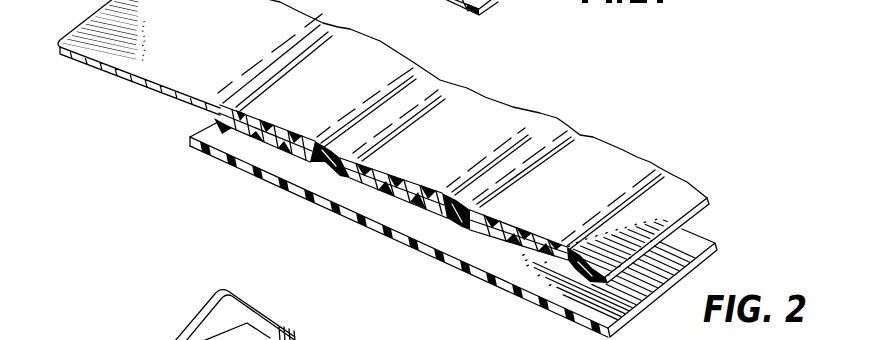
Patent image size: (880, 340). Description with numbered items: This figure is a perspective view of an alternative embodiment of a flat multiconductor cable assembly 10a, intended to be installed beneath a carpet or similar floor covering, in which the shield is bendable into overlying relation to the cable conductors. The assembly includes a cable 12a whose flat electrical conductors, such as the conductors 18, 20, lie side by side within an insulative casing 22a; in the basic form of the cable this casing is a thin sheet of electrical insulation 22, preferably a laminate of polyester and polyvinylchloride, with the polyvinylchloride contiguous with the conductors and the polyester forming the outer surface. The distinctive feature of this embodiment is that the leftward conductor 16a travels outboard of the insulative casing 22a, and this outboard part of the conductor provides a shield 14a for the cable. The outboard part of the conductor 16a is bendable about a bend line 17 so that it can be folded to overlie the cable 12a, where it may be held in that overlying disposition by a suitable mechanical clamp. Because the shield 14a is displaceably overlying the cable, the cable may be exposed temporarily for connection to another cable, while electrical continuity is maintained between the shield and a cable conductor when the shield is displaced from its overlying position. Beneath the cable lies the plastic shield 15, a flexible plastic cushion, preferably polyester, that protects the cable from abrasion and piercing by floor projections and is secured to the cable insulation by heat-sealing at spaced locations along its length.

The cable assembly 10a is at (388, 168).
The cable 12a is at (678, 197).
The shield 14a is at (184, 27).
The plastic shield 15 is at (252, 154).
The leftward conductor 16a is at (283, 138).
The bend line 17 is at (249, 71).
The electrical conductor 18 is at (407, 192).
The electrical conductor 20 is at (540, 247).
The sheet of electrical insulation 22 is at (432, 0).
The insulative casing 22a is at (553, 298).